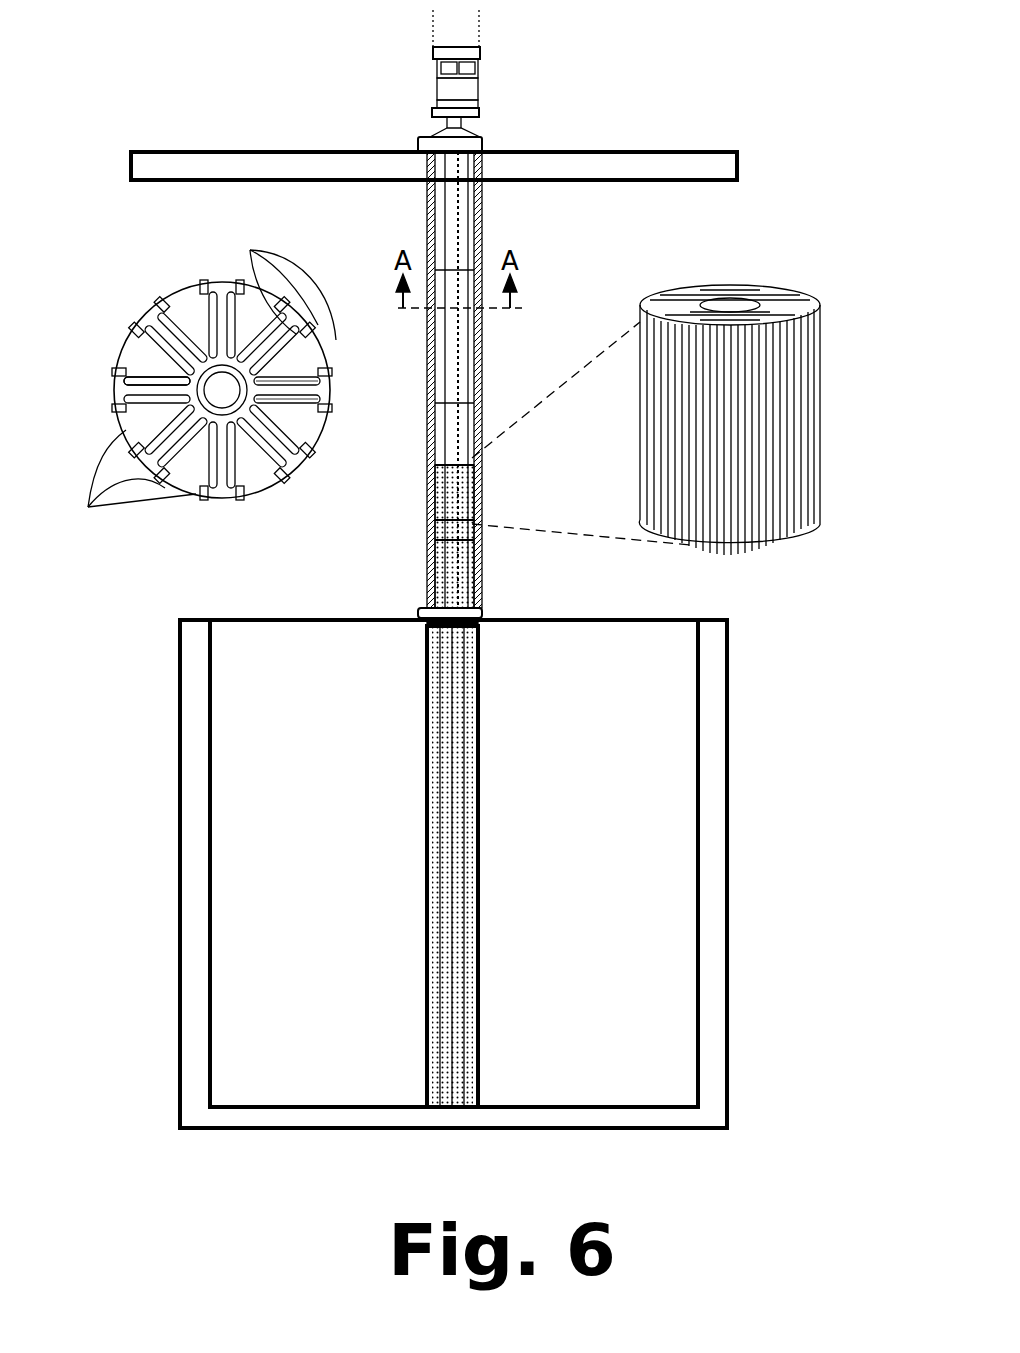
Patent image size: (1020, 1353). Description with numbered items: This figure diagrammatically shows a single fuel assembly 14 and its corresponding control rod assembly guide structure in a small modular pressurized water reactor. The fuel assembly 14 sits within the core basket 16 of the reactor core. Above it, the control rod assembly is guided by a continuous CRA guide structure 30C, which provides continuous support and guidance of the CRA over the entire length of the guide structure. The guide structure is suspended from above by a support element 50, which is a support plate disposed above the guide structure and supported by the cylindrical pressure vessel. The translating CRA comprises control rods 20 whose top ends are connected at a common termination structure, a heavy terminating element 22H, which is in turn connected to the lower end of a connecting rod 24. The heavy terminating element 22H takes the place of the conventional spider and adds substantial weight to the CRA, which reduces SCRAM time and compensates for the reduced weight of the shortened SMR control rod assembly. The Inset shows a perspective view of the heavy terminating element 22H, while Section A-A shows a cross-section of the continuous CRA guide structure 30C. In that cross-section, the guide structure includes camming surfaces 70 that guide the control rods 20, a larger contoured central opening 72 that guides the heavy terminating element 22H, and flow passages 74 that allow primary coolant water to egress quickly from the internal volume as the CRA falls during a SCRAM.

The fuel assembly 14 is at (455, 968).
The core basket 16 is at (193, 760).
The control rods 20 is at (430, 588).
The heavy terminating element 22H is at (442, 496).
The connecting rod 24 is at (455, 392).
The continuous CRA guide structure 30C is at (172, 264).
The support element 50 is at (667, 160).
The camming surfaces 70 is at (266, 262).
The contoured central opening 72 is at (178, 366).
The flow passages 74 is at (132, 488).